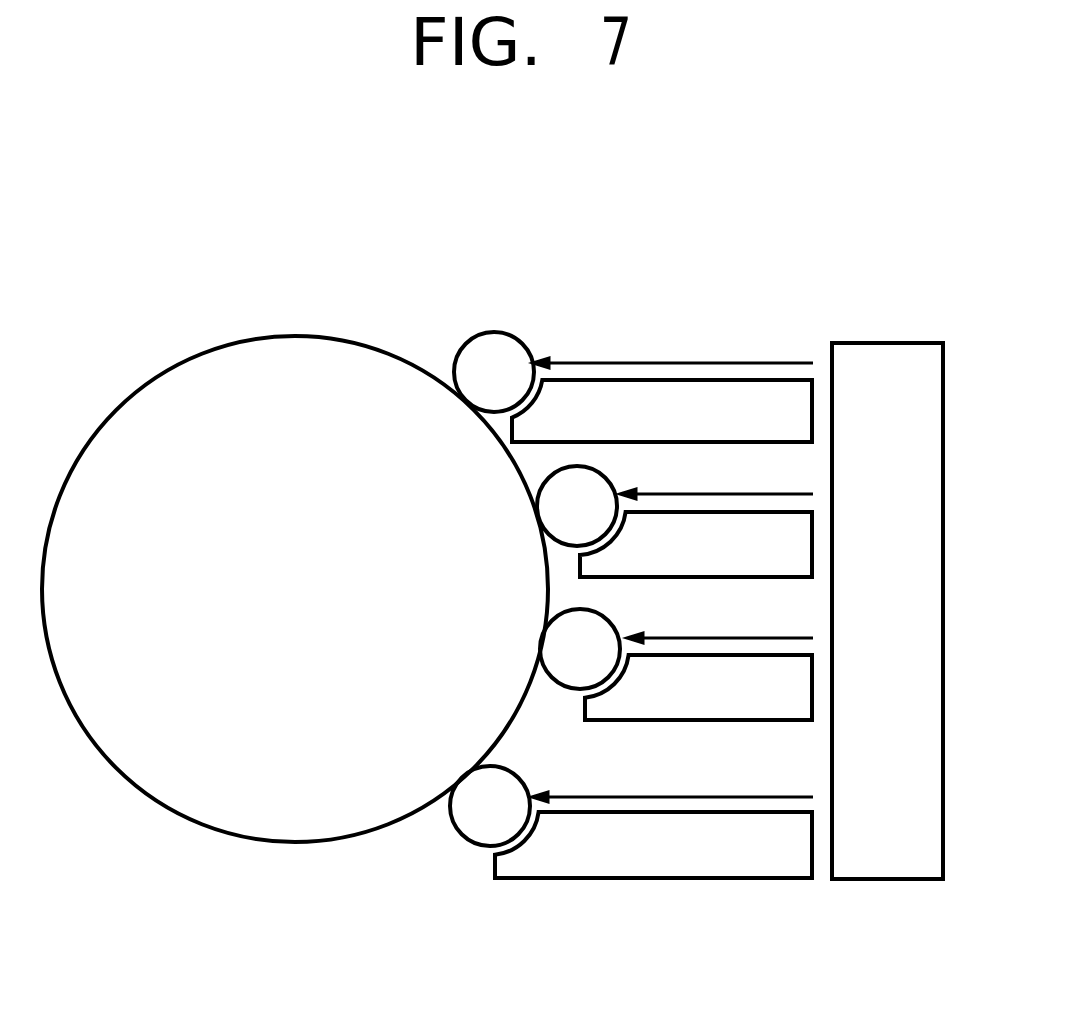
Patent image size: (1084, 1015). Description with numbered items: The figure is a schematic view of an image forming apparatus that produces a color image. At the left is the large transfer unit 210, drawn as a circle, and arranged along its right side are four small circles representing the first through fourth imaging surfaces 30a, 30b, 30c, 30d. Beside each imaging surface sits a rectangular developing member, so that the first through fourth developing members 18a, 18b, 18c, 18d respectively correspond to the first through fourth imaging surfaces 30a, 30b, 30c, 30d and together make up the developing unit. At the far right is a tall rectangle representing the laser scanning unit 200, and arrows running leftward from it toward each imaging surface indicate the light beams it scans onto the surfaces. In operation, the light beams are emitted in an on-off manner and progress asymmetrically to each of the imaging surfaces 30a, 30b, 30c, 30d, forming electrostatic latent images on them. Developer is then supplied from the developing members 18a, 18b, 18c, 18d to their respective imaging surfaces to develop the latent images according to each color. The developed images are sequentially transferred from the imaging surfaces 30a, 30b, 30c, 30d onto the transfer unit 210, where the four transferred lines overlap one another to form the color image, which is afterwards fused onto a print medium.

The transfer unit 210 is at (291, 345).
The first imaging surface 30a is at (494, 340).
The second imaging surface 30b is at (588, 478).
The third imaging surface 30c is at (600, 665).
The fourth imaging surface 30d is at (476, 828).
The first developing member 18a is at (677, 403).
The second developing member 18b is at (773, 528).
The third developing member 18c is at (780, 703).
The fourth developing member 18d is at (576, 860).
The laser scanning unit 200 is at (889, 343).